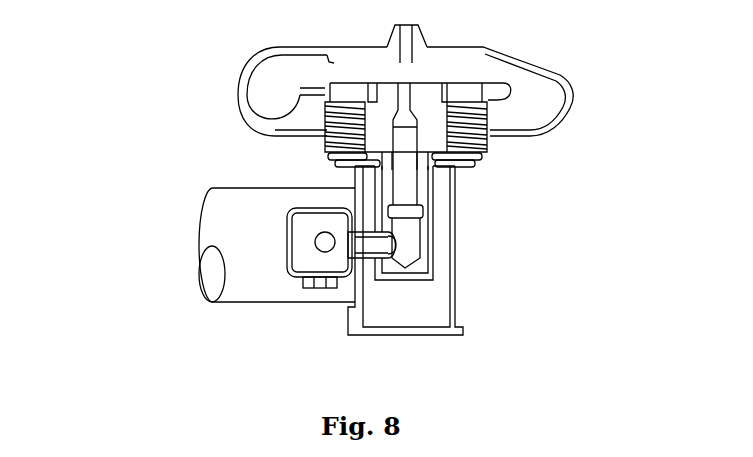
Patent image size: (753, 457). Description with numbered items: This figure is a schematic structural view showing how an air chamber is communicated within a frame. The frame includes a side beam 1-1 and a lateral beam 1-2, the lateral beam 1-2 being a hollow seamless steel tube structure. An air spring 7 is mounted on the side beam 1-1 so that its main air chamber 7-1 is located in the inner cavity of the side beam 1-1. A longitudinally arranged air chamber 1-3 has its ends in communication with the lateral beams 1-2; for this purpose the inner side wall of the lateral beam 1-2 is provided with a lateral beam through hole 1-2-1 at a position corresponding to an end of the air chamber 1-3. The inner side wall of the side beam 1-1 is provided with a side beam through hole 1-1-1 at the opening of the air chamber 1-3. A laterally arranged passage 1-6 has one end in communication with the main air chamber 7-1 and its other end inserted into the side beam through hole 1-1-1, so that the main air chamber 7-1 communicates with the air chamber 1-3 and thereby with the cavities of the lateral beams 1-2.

The air spring 7 is at (523, 72).
The main air chamber 7-1 is at (425, 120).
The side beam 1-1 is at (455, 205).
The side beam through hole 1-1-1 is at (352, 252).
The lateral beam 1-2 is at (200, 248).
The lateral beam through hole 1-2-1 is at (316, 243).
The air chamber 1-3 is at (298, 251).
The passage 1-6 is at (363, 247).